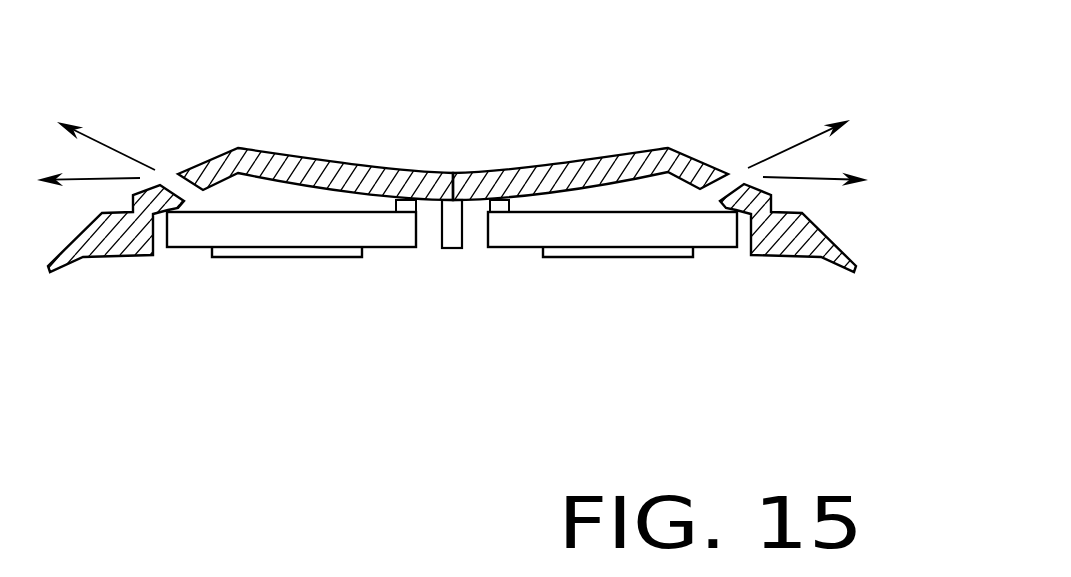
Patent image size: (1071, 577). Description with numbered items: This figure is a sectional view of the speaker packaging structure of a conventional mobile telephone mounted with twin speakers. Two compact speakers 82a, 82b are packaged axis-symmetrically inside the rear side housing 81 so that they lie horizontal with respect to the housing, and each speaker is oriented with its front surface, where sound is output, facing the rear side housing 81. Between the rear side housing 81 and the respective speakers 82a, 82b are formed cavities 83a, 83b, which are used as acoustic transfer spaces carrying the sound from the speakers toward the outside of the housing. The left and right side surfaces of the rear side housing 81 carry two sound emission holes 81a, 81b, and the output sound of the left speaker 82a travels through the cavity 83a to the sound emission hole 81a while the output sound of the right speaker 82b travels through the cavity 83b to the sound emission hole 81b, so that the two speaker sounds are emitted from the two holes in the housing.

The rear side housing 81 is at (494, 136).
The sound emission hole 81a is at (177, 183).
The sound emission hole 81b is at (732, 182).
The compact speaker 82a is at (270, 232).
The compact speaker 82b is at (618, 233).
The cavity 83a is at (248, 197).
The cavity 83b is at (627, 197).